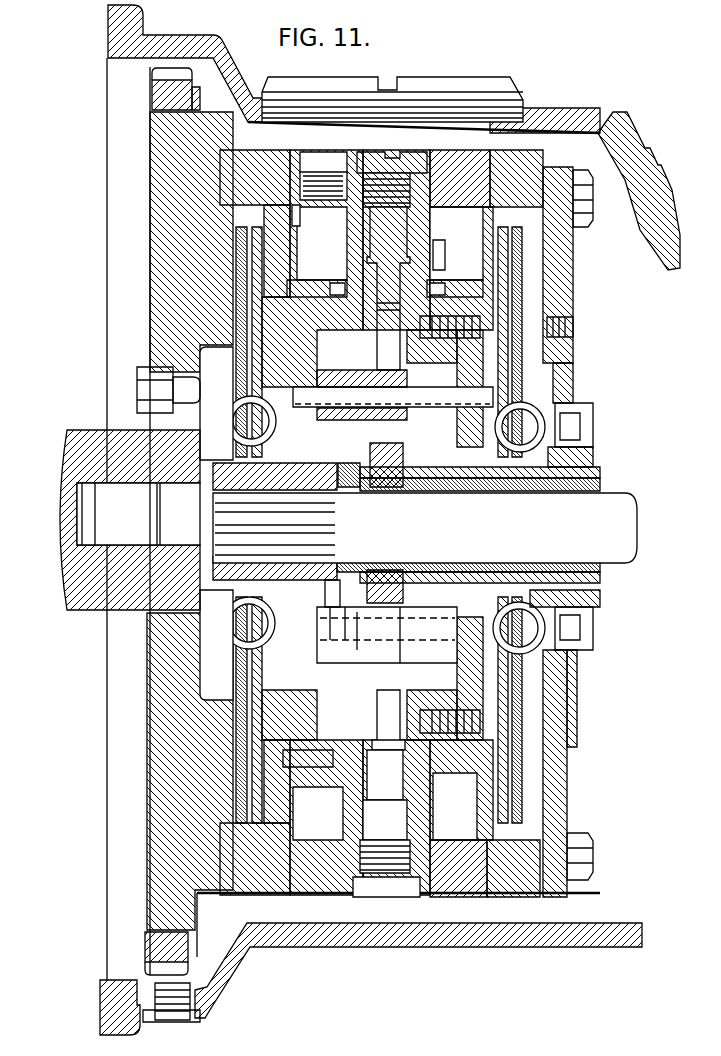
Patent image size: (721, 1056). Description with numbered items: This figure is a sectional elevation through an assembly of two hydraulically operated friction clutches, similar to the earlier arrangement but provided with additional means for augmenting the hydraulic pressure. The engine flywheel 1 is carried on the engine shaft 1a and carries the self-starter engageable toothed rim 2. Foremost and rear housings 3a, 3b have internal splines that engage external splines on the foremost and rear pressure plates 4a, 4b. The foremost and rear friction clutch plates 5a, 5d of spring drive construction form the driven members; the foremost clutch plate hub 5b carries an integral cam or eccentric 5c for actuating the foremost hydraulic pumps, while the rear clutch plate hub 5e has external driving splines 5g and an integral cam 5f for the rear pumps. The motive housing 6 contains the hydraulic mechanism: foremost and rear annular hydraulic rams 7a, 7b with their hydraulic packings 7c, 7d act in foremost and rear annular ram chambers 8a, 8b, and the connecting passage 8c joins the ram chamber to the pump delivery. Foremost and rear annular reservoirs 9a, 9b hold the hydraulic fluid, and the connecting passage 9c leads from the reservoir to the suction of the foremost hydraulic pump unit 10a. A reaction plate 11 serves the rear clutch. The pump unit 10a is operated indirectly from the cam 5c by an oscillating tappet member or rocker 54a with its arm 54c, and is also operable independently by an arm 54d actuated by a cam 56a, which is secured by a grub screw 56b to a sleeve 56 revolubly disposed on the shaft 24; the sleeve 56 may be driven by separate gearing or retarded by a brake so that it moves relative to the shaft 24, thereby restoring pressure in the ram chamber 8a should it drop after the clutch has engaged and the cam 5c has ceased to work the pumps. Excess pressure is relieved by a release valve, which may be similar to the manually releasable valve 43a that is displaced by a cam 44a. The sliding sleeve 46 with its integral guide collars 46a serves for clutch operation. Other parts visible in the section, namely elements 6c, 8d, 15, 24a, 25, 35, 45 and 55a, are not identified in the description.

The engine flywheel 1 is at (170, 160).
The engine shaft 1a is at (75, 447).
The self-starter engageable toothed rim 2 is at (150, 92).
The foremost housing 3a is at (250, 165).
The rear housing 3b is at (535, 165).
The foremost pressure plate 4a is at (270, 240).
The rear pressure plate 4b is at (545, 308).
The foremost friction clutch plate 5a is at (245, 248).
The foremost clutch plate hub 5b is at (247, 473).
The cam 5c is at (333, 562).
The rear friction clutch plate 5d is at (540, 278).
The rear clutch plate hub 5e is at (592, 476).
The cam 5f is at (444, 578).
The external driving splines 5g is at (596, 604).
The motive housing 6 is at (467, 160).
The bolt 6c is at (593, 203).
The foremost hydraulic ram 7a is at (275, 278).
The rear hydraulic ram 7b is at (435, 292).
The hydraulic packing 7c is at (307, 243).
The hydraulic packing 7d is at (440, 285).
The foremost annular ram chamber 8a is at (347, 287).
The rear annular ram chamber 8b is at (423, 283).
The connecting passage 8c is at (353, 820).
The pin 8d is at (448, 797).
The foremost annular reservoir 9a is at (338, 243).
The rear annular reservoir 9b is at (478, 233).
The connecting passage 9c is at (362, 840).
The foremost hydraulic pump unit 10a is at (387, 860).
The reaction plate 11 is at (556, 249).
The collar 15 is at (593, 455).
The shaft 24 is at (590, 528).
The splines 24a is at (227, 523).
The bolt 25 is at (160, 493).
The flange 35 is at (190, 40).
The manually releasable valve 43a is at (387, 213).
The cam 44a is at (362, 395).
The shaft 45 is at (444, 403).
The sliding sleeve 46 is at (595, 486).
The guide collars 46a is at (400, 487).
The oscillating tappet member 54a is at (355, 655).
The arm 54c is at (348, 591).
The arm 54d is at (352, 612).
The drum plate 55a is at (340, 620).
The sleeve 56 is at (595, 495).
The cam 56a is at (333, 457).
The grub screw 56b is at (293, 427).